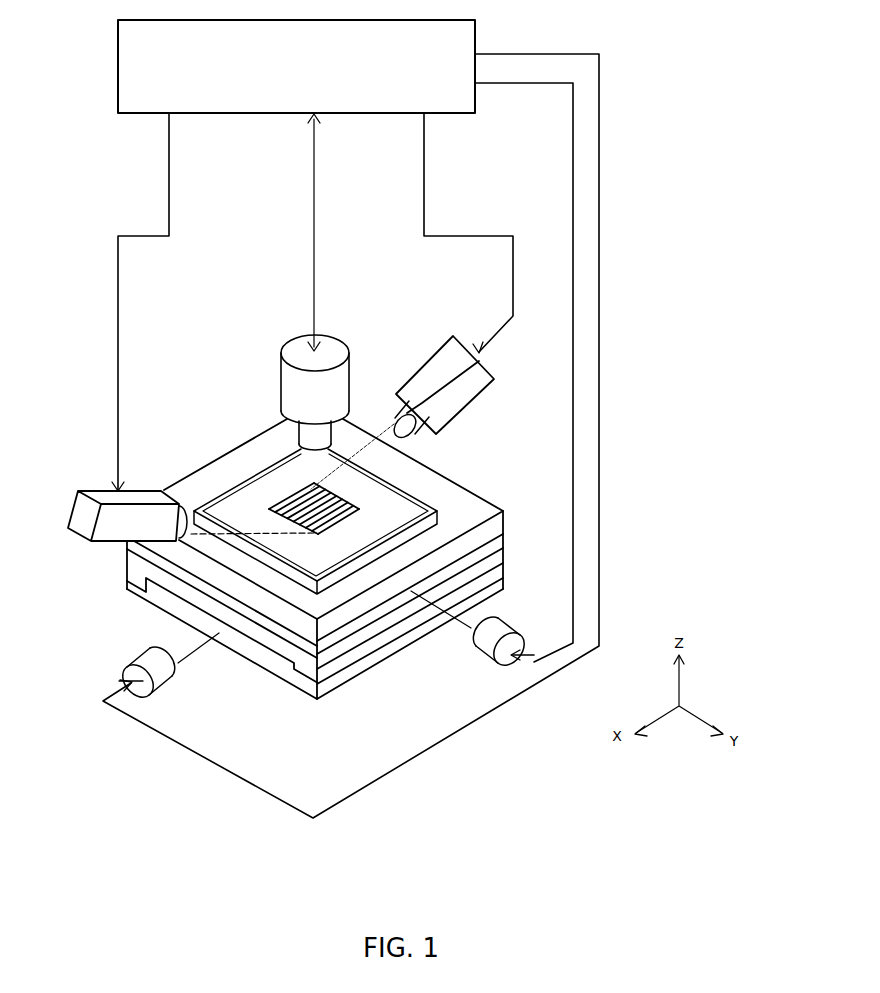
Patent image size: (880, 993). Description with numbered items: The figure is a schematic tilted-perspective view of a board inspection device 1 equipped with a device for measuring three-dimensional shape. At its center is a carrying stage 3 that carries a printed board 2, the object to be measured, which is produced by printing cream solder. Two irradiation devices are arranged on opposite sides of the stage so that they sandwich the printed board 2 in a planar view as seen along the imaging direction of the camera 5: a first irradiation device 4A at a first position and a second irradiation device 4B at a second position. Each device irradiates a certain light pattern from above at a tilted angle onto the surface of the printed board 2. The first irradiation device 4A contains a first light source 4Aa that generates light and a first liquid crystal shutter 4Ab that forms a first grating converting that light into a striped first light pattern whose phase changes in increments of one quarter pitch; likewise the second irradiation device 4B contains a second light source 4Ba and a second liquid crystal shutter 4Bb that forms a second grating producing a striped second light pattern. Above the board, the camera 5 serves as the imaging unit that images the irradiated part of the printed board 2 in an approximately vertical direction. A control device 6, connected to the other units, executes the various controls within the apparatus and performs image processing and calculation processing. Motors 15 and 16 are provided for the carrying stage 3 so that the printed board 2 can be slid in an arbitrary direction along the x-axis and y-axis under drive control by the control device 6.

The board inspection device 1 is at (328, 590).
The printed board 2 is at (282, 470).
The carrying stage 3 is at (206, 466).
The first irradiation device 4A is at (116, 518).
The first light source 4Aa is at (110, 536).
The first liquid crystal shutter 4Ab is at (125, 541).
The second irradiation device 4B is at (466, 386).
The second light source 4Ba is at (470, 385).
The second liquid crystal shutter 4Bb is at (465, 410).
The camera 5 is at (280, 383).
The control device 6 is at (201, 113).
The motor 15 is at (140, 655).
The motor 16 is at (490, 660).